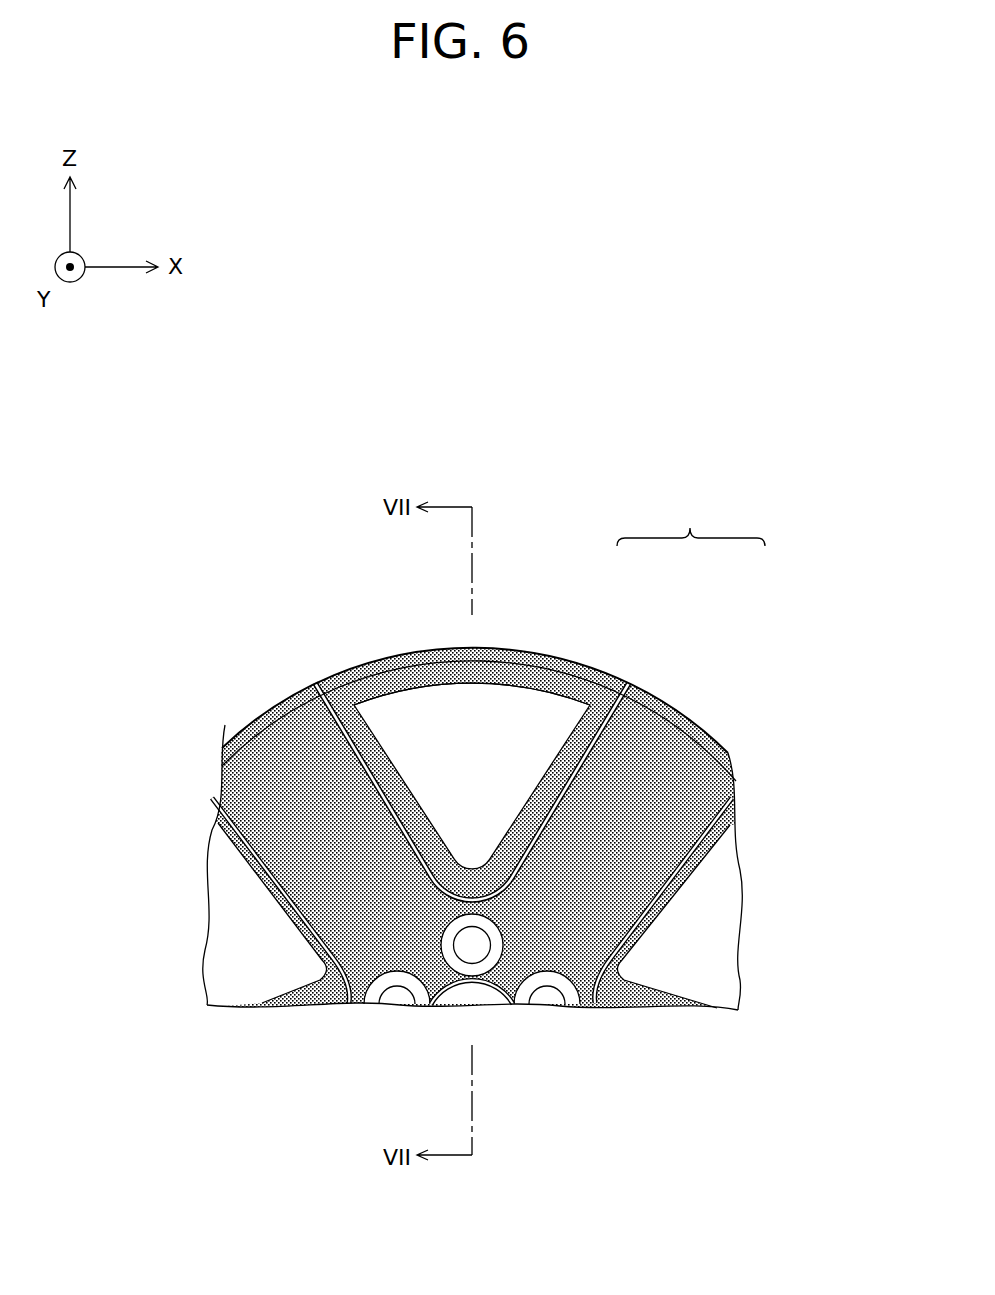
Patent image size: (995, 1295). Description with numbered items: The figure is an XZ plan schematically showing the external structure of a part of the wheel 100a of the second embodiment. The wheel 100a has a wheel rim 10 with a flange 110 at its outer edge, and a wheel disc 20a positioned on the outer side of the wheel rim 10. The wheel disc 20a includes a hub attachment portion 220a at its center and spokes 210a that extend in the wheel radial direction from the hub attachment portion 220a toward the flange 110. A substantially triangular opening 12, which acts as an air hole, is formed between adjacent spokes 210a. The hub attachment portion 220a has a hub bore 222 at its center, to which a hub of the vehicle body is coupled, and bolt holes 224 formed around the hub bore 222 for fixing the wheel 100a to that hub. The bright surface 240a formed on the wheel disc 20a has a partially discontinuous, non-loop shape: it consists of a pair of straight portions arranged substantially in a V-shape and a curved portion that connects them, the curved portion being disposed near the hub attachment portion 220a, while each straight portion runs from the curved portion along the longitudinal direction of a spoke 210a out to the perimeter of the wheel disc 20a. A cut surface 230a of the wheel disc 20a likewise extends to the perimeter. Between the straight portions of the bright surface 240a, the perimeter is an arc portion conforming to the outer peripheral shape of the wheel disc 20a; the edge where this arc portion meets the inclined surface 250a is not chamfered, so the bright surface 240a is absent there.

The wheel rim 10 is at (594, 646).
The opening 12 is at (492, 770).
The wheel disc 20a is at (653, 726).
The wheel 100a is at (691, 518).
The flange 110 is at (432, 655).
The spoke 210a is at (300, 753).
The hub attachment portion 220a is at (470, 948).
The hub bore 222 is at (480, 997).
The bolt hole 224 is at (432, 988).
The cut surface 230a is at (255, 775).
The bright surface 240a is at (347, 713).
The inclined surface 250a is at (515, 665).